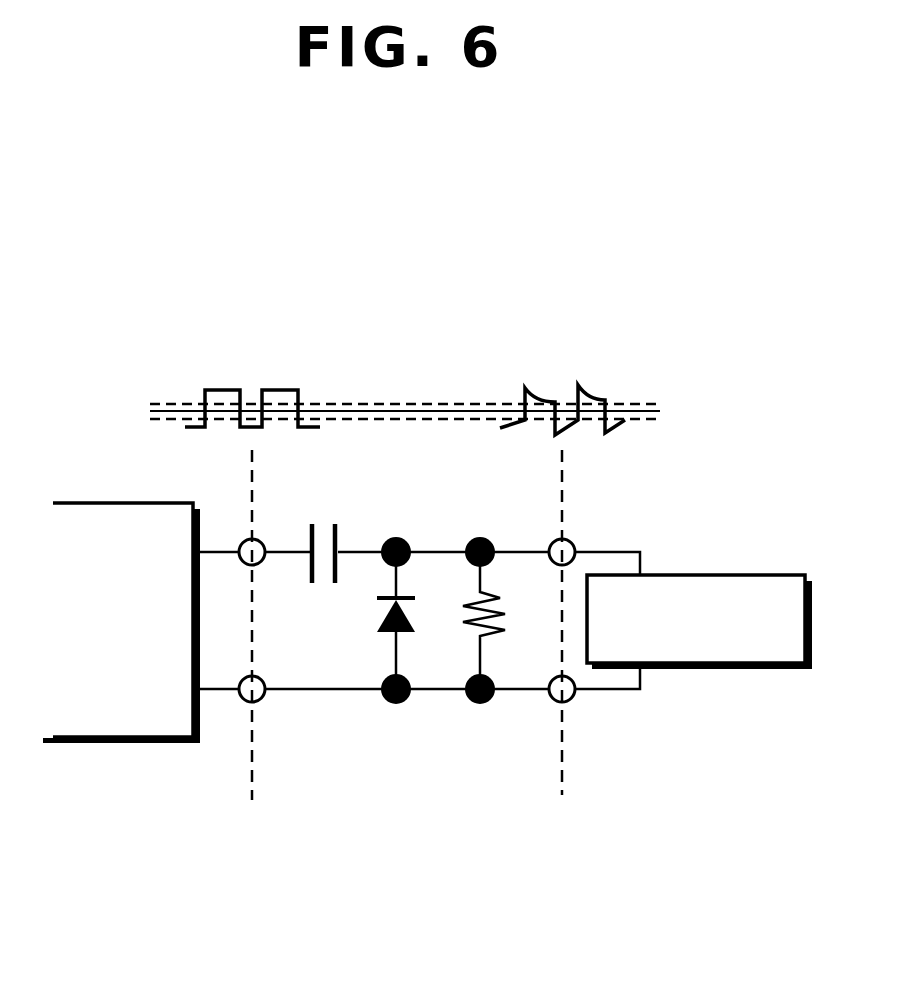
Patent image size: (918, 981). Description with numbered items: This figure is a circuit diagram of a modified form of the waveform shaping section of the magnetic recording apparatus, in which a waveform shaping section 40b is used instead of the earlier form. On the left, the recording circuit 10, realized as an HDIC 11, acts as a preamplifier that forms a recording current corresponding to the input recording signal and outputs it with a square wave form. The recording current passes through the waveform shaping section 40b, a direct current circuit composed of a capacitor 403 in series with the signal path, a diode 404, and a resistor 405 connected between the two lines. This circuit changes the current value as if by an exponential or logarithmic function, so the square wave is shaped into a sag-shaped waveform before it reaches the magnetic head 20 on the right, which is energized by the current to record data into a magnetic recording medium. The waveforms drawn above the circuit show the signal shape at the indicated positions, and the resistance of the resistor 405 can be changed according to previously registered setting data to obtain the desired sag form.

The recording circuit 10 is at (123, 657).
The HDIC 11 is at (115, 742).
The magnetic head 20 is at (697, 668).
The waveform shaping section 40b is at (401, 694).
The capacitor 403 is at (320, 521).
The diode 404 is at (366, 627).
The resistor 405 is at (468, 642).